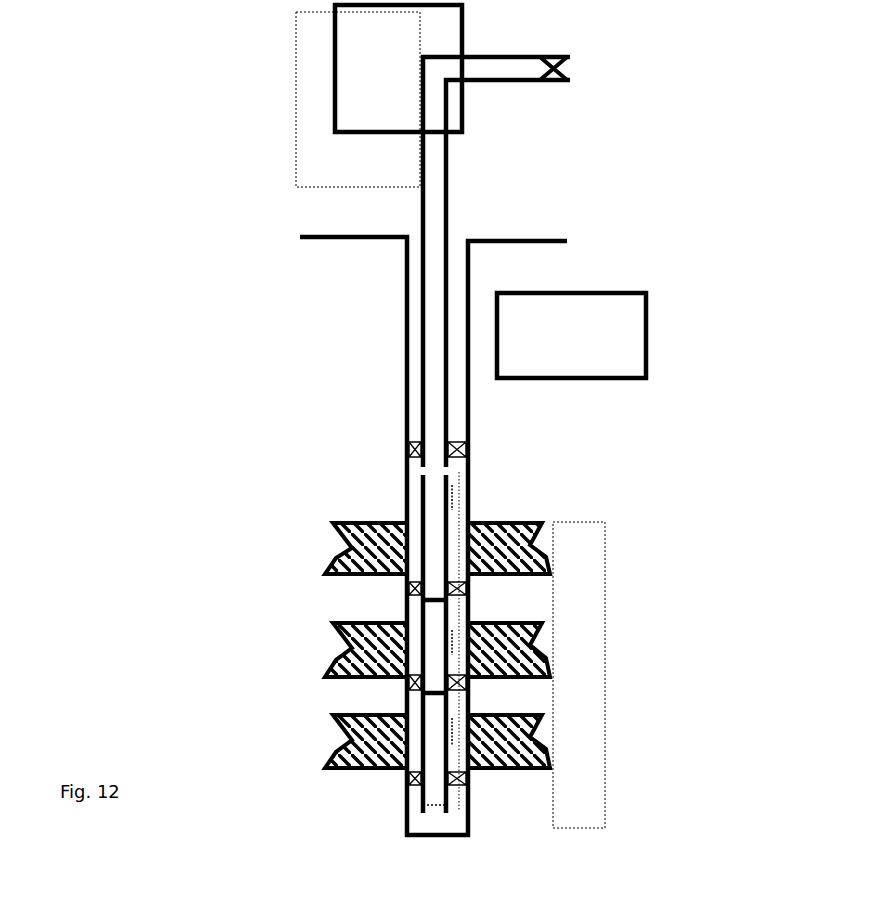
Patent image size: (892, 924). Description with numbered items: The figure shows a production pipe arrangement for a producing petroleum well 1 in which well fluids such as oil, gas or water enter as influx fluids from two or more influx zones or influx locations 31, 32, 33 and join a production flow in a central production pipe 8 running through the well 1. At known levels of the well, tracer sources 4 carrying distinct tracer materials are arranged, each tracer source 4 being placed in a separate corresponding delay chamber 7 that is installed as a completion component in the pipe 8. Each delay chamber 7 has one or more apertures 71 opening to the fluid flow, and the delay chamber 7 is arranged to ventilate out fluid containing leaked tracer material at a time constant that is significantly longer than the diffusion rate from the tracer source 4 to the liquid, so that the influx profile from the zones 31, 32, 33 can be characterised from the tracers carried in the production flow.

The producing petroleum well 1 is at (307, 348).
The central production pipe 8 is at (452, 435).
The tracer source 4 is at (420, 498).
The delay chamber 7 is at (470, 520).
The aperture 71 is at (452, 465).
The influx zone 31 is at (455, 741).
The influx zone 32 is at (456, 650).
The influx zone 33 is at (453, 548).